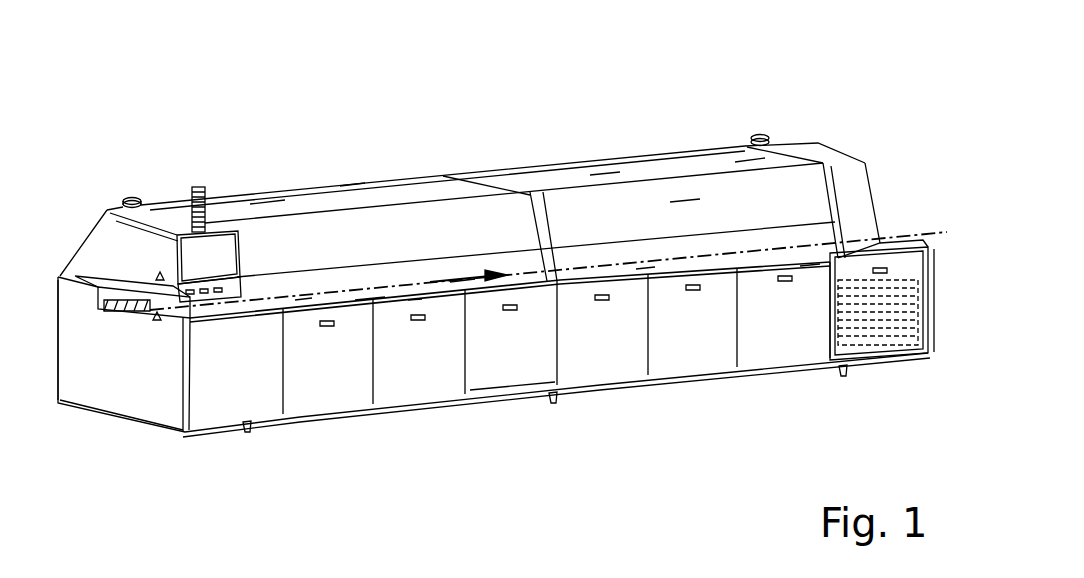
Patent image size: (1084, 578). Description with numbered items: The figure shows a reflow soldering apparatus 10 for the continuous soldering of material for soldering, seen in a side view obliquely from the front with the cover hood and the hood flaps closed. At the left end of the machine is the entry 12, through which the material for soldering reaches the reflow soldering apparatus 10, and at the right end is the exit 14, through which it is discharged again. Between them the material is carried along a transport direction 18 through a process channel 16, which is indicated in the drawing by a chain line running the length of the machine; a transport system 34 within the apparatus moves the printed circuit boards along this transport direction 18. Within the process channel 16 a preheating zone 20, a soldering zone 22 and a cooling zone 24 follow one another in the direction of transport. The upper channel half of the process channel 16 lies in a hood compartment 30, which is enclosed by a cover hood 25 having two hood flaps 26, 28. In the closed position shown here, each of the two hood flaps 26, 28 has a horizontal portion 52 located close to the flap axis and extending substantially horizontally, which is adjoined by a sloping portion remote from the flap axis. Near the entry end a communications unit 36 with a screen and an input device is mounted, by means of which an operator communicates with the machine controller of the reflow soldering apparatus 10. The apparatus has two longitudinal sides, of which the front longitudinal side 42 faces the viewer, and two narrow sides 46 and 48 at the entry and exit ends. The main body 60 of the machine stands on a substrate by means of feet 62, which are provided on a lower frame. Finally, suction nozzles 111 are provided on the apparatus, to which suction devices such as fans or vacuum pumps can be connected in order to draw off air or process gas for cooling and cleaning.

The reflow soldering apparatus 10 is at (744, 92).
The entry 12 is at (130, 318).
The exit 14 is at (931, 232).
The process channel 16 is at (370, 300).
The transport direction 18 is at (461, 280).
The preheating zone 20 is at (415, 302).
The soldering zone 22 is at (645, 268).
The cooling zone 24 is at (810, 265).
The cover hood 25 is at (349, 168).
The hood flap 26 is at (267, 203).
The hood flap 28 is at (607, 173).
The hood compartment 30 is at (684, 200).
The transport system 34 is at (303, 292).
The communications unit 36 is at (208, 264).
The front longitudinal side 42 is at (500, 380).
The narrow side 46 is at (157, 408).
The narrow side 48 is at (928, 316).
The horizontal portion 52 is at (750, 160).
The main body 60 is at (87, 378).
The feet 62 is at (247, 431).
The suction nozzles 111 is at (133, 199).